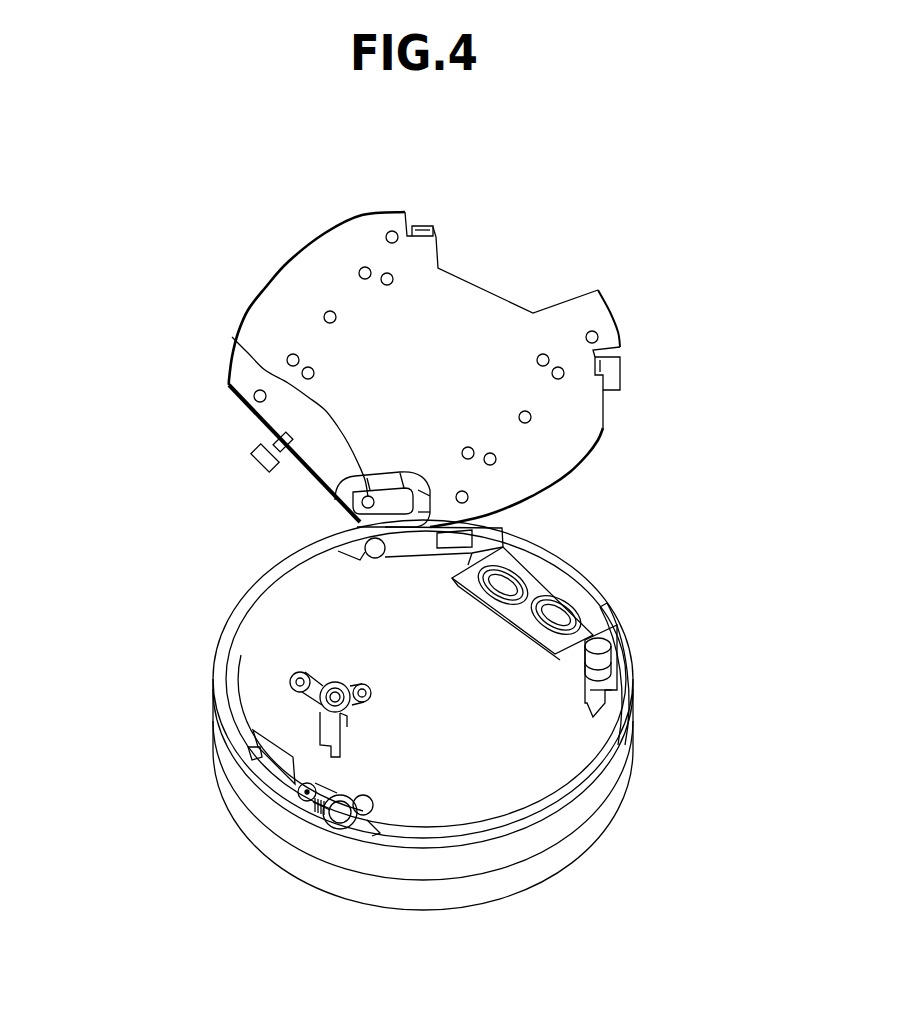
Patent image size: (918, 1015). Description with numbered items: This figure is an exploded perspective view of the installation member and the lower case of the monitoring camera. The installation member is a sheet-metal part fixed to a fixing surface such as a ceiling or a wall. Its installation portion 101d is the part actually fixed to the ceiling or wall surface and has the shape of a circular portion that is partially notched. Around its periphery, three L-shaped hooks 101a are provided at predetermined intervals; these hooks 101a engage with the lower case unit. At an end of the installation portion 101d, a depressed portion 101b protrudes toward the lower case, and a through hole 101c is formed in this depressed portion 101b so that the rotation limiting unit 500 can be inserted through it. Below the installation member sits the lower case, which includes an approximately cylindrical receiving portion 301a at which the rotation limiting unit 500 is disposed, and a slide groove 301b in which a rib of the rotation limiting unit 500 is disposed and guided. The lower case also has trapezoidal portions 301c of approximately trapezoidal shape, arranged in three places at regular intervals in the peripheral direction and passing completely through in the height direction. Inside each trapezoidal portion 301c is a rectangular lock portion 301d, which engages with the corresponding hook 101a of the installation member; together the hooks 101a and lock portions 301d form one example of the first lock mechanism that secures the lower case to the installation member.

The hook 101a is at (435, 226).
The depressed portion 101b is at (333, 500).
The through hole 101c is at (232, 337).
The installation portion 101d is at (353, 243).
The receiving portion 301a is at (327, 822).
The slide groove 301b is at (375, 805).
The trapezoidal portion 301c is at (350, 530).
The lock portion 301d is at (487, 548).
The rotation limiting unit 500 is at (285, 664).